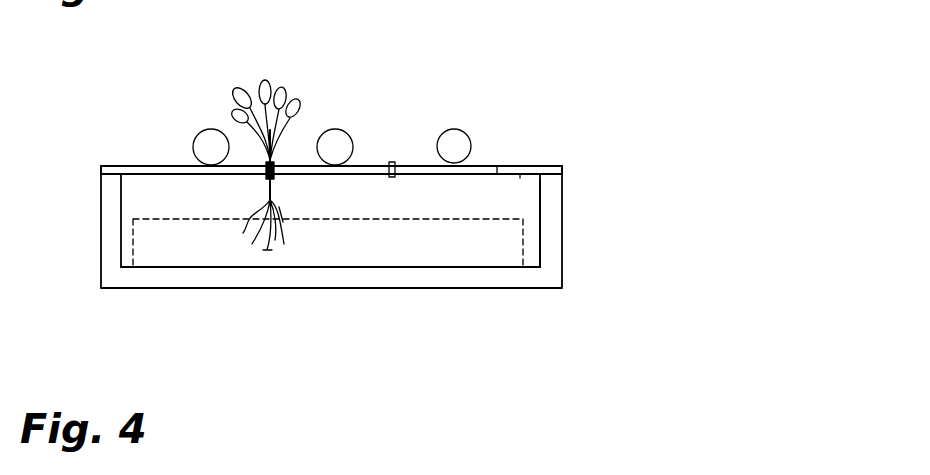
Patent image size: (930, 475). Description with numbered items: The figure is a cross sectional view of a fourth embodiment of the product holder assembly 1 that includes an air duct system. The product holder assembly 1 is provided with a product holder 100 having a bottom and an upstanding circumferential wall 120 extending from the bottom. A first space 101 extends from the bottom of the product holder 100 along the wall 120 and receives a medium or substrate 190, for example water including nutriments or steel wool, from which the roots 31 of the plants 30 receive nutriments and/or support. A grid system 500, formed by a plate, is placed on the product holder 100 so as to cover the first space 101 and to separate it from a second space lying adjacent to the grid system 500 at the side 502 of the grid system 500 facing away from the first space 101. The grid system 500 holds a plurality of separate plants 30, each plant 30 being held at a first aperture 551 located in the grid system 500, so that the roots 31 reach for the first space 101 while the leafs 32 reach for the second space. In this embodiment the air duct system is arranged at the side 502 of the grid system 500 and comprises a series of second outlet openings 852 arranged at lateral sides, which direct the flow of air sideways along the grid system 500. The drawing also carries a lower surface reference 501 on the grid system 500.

The product holder assembly 1 is at (455, 317).
The plant 30 is at (270, 130).
The roots 31 is at (265, 248).
The leafs 32 is at (247, 87).
The product holder 100 is at (548, 273).
The first space 101 is at (528, 247).
The upstanding circumferential wall 120 is at (550, 253).
The medium or substrate 190 is at (163, 242).
The grid system 500 is at (526, 167).
The lid lower surface 501 is at (522, 176).
The side of the grid system 502 is at (497, 167).
The first aperture 551 is at (392, 162).
The second outlet openings 852 is at (193, 145).